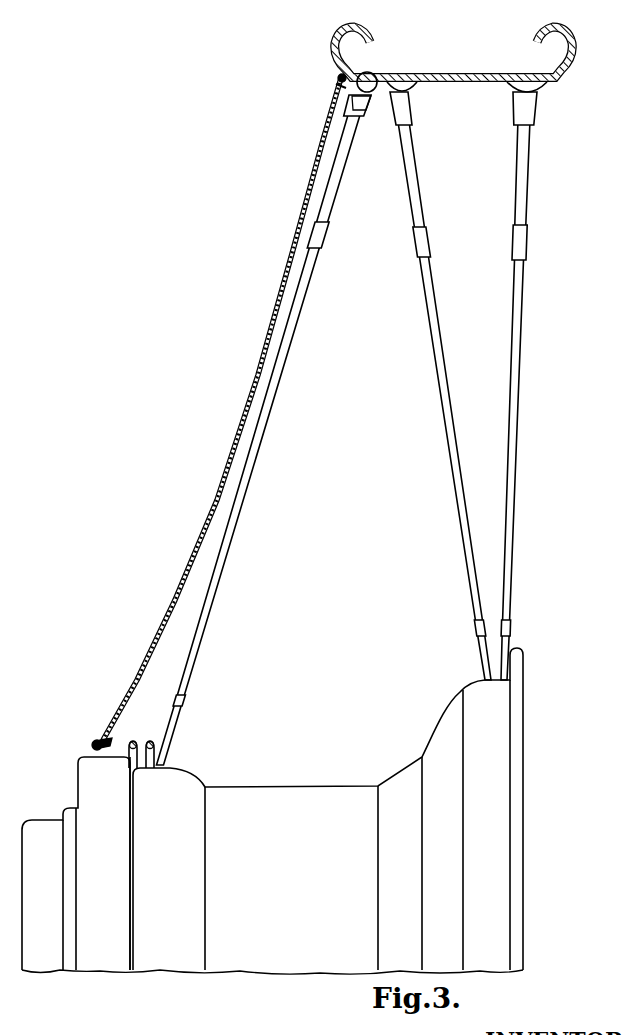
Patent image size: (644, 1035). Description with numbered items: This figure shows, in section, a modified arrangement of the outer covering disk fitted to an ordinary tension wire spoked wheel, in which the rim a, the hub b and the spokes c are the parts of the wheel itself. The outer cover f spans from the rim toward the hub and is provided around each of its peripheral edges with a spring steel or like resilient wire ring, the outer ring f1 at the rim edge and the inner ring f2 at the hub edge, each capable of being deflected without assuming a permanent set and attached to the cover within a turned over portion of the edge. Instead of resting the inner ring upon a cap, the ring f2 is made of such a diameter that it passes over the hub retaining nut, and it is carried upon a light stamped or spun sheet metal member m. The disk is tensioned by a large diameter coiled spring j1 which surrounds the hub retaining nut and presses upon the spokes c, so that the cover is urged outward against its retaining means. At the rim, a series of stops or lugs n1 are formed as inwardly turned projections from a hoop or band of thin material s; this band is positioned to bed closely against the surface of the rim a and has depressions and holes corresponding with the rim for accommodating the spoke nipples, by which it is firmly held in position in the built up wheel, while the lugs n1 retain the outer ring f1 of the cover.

The rim a is at (444, 75).
The hub b is at (272, 811).
The spokes c is at (302, 308).
The outer cover f is at (280, 298).
The outer resilient wire ring f1 is at (336, 86).
The inner resilient wire ring f2 is at (101, 736).
The coiled spring j1 is at (135, 740).
The sheet metal member m is at (93, 745).
The stops or lugs n1 is at (338, 78).
The hoop or band s is at (361, 113).